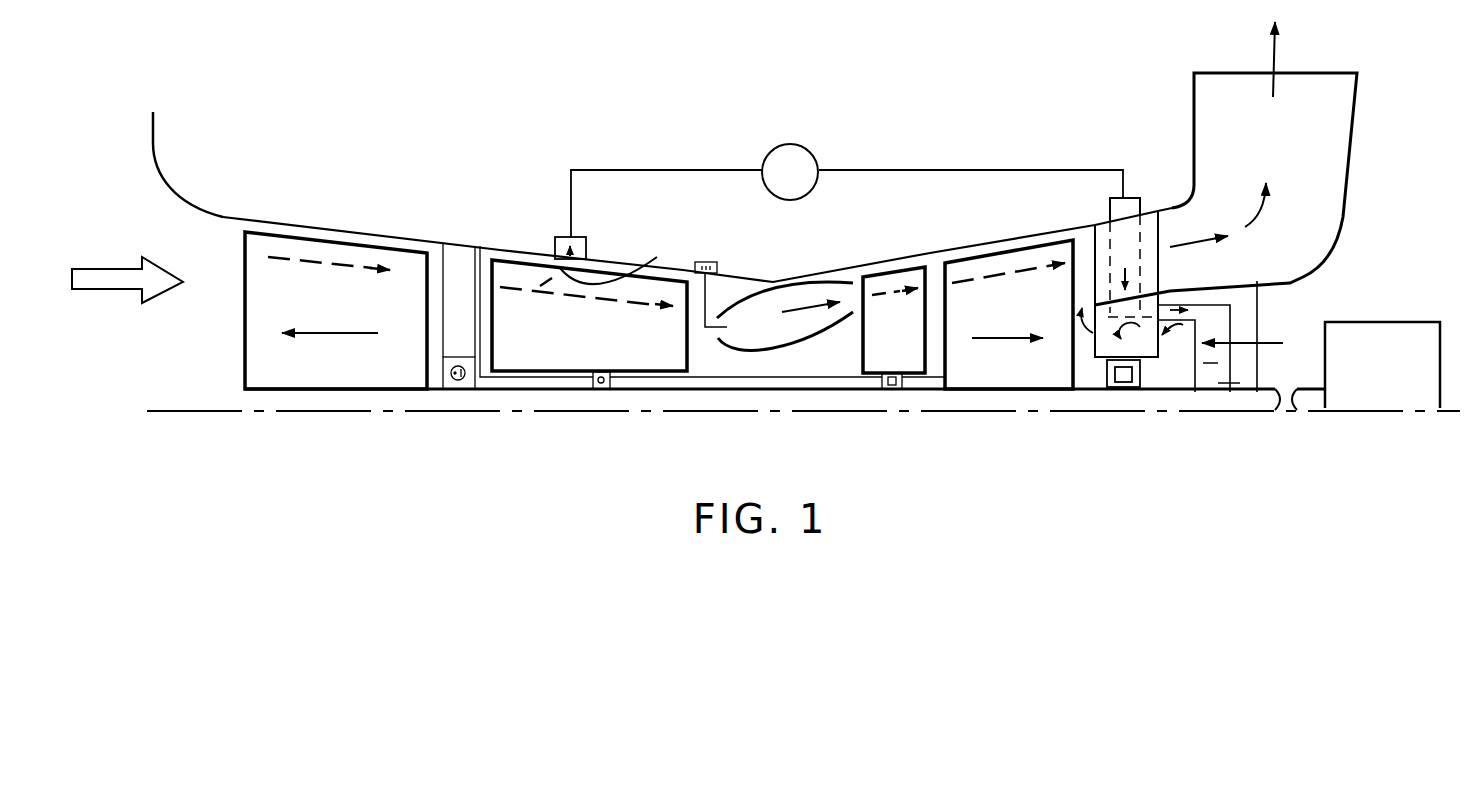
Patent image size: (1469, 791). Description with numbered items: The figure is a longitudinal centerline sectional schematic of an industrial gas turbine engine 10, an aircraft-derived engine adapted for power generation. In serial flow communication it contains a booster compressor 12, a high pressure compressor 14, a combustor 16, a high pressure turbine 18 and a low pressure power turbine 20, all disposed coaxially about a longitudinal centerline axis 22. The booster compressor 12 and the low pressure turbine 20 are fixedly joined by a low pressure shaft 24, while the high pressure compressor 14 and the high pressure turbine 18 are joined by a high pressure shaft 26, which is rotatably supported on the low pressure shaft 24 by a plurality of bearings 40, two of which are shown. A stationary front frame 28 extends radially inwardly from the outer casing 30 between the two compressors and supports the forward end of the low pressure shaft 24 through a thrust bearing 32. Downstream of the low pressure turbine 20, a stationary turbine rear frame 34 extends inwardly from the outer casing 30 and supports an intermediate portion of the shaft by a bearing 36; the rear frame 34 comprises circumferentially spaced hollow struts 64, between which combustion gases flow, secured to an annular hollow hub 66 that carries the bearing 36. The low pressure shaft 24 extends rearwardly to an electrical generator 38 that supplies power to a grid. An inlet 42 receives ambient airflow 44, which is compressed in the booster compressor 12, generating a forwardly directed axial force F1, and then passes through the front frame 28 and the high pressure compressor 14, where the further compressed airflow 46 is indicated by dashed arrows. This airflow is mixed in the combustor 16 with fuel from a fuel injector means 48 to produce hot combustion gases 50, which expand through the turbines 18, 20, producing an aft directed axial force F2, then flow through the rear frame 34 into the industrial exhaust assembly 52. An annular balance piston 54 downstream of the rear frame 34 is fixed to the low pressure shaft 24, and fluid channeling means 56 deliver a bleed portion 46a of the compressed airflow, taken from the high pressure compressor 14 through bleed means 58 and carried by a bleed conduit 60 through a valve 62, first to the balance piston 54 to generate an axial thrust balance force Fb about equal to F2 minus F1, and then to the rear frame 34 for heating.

The gas turbine engine 10 is at (409, 233).
The booster compressor 12 is at (316, 313).
The high pressure compressor 14 is at (547, 355).
The combustor 16 is at (736, 340).
The high pressure turbine 18 is at (881, 348).
The low pressure power turbine 20 is at (989, 318).
The centerline axis 22 is at (538, 413).
The low pressure shaft 24 is at (722, 382).
The high pressure shaft 26 is at (794, 365).
The front frame 28 is at (458, 283).
The outer casing 30 is at (505, 249).
The thrust bearing 32 is at (490, 378).
The turbine rear frame 34 is at (1149, 206).
The bearing 36 is at (1142, 383).
The electrical generator 38 is at (1366, 378).
The bearings 40 is at (607, 378).
The inlet 42 is at (167, 185).
The ambient airflow 44 is at (112, 290).
The compressed airflow 46 is at (643, 306).
The bleed portion 46a is at (1245, 278).
The fuel injector means 48 is at (720, 268).
The combustion gases 50 is at (807, 305).
The industrial exhaust assembly 52 is at (1358, 117).
The balance piston 54 is at (1176, 356).
The fluid channeling means 56 is at (1201, 294).
The bleed means 58 is at (587, 243).
The bleed conduit 60 is at (663, 168).
The valve 62 is at (805, 145).
The hollow struts 64 is at (1170, 230).
The hollow hub 66 is at (1093, 357).
The forwardly directed axial force F1 is at (330, 337).
The aft directed axial force F2 is at (992, 340).
The axial thrust balance force Fb is at (1270, 340).